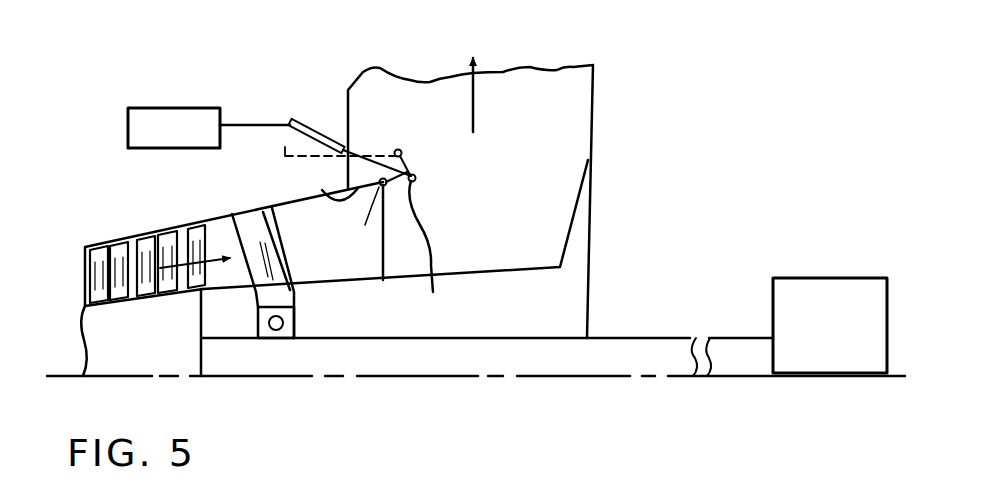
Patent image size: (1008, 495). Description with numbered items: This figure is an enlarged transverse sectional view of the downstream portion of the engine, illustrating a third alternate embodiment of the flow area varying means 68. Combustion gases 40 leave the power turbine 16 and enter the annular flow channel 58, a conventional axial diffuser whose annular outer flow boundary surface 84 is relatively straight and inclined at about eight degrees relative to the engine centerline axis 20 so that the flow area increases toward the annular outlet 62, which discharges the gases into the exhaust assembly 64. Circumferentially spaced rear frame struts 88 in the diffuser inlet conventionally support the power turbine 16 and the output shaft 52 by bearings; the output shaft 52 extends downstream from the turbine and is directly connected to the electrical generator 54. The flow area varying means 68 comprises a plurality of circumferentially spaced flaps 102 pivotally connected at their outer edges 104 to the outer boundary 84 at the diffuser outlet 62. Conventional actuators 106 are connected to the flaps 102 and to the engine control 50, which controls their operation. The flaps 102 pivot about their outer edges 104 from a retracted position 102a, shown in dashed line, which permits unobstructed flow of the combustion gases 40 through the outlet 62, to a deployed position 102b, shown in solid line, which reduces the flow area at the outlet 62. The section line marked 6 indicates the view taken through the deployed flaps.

The section line 6- 6 is at (436, 145).
The power turbine 16 is at (117, 228).
The engine centerline axis 20 is at (400, 378).
The combustion gases 40 is at (211, 226).
The engine control 50 is at (155, 137).
The output shaft 52 is at (663, 338).
The electrical generator 54 is at (813, 347).
The annular flow channel 58 is at (305, 238).
The annular outlet 62 is at (385, 268).
The exhaust assembly 64 is at (592, 135).
The flow area varying means 68 is at (254, 110).
The annular outer flow boundary surface 84 is at (342, 183).
The rear frame struts 88 is at (242, 277).
The flaps 102 is at (420, 193).
The retracted position 102a is at (413, 172).
The deployed position 102b is at (424, 251).
The outer edges 104 is at (412, 239).
The actuators 106 is at (315, 119).